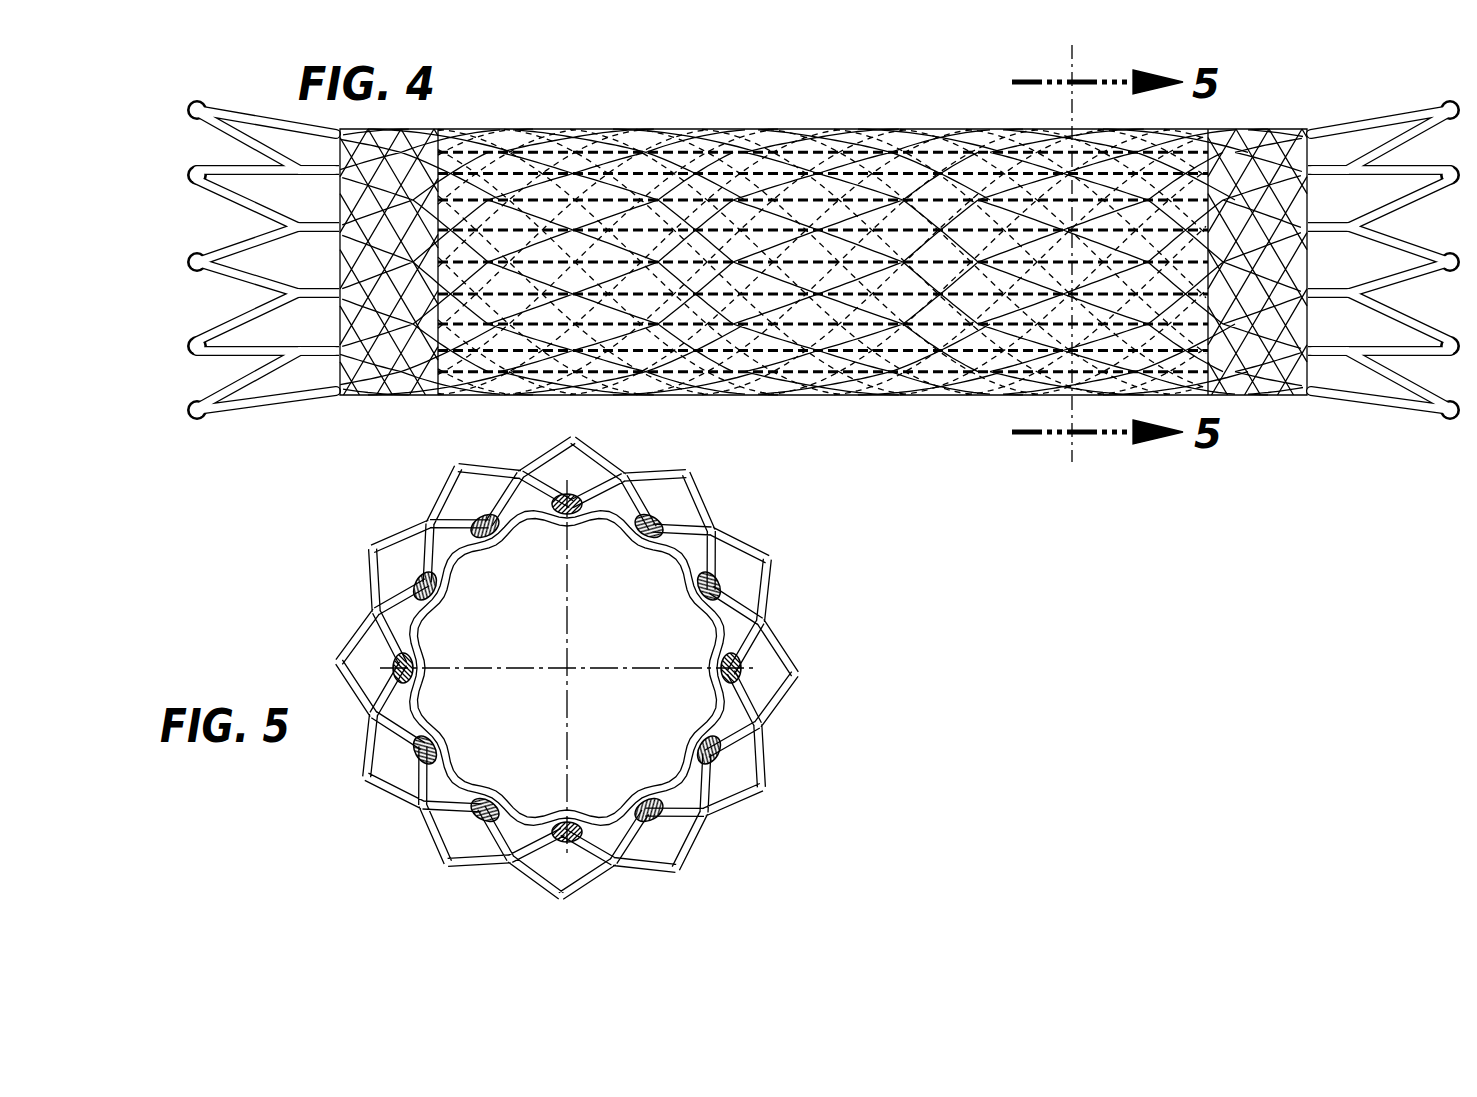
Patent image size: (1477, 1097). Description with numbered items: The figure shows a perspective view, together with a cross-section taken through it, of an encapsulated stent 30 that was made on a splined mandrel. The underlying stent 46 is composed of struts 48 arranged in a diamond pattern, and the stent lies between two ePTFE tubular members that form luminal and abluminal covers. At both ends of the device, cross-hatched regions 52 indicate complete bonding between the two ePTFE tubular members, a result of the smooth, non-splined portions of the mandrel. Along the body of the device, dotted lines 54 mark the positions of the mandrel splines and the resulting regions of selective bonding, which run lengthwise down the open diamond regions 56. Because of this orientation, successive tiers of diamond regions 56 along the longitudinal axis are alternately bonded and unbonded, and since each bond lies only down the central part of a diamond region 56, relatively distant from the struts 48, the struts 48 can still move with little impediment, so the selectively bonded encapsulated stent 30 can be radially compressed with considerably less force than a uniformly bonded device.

In FIG. 4, the encapsulated stent 30 is at (313, 425).
In FIG. 4, the stent 46 is at (1302, 428).
In FIG. 4, the struts 48 is at (905, 368).
In FIG. 5, the struts 48 is at (712, 758).
In FIG. 4, the regions 52 is at (1243, 385).
In FIG. 4, the dotted lines 54 is at (811, 325).
In FIG. 5, the dotted lines 54 is at (712, 700).
In FIG. 4, the open diamond regions 56 is at (960, 345).